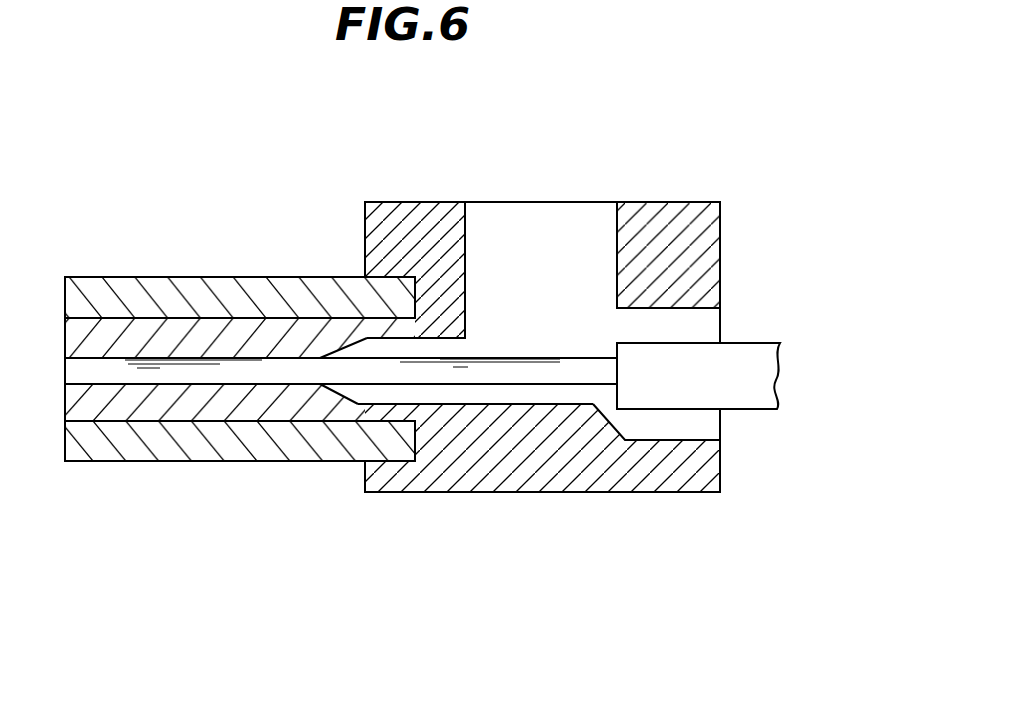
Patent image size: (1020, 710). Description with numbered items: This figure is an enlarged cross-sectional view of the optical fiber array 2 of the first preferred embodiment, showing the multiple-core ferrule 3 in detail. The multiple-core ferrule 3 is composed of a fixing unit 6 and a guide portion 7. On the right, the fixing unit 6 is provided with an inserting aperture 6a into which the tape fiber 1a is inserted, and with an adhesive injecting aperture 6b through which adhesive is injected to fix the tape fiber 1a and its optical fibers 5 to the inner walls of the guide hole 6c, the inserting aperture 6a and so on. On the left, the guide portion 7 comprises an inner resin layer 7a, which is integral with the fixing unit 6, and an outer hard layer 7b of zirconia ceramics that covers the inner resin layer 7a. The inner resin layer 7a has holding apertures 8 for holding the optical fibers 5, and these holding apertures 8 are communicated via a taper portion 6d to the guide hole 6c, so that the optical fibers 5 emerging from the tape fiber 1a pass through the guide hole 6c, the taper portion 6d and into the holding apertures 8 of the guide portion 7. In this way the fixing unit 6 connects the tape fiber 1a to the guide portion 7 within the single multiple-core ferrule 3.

The optical fiber array 2 is at (193, 115).
The multiple-core ferrule 3 is at (384, 200).
The adhesive injecting aperture 6b is at (562, 214).
The holding aperture 8 is at (257, 357).
The optical fiber 5 is at (518, 371).
The tape fiber 1a is at (747, 352).
The outer hard layer 7b is at (114, 455).
The inner resin layer 7a is at (295, 413).
The guide portion 7 is at (73, 497).
The taper portion 6d is at (355, 398).
The guide hole 6c is at (552, 405).
The fixing unit 6 is at (410, 610).
The tape fiber inserting aperture 6a is at (695, 433).